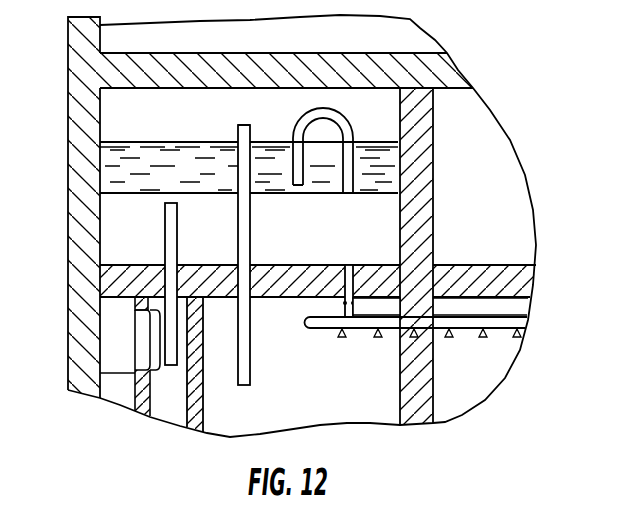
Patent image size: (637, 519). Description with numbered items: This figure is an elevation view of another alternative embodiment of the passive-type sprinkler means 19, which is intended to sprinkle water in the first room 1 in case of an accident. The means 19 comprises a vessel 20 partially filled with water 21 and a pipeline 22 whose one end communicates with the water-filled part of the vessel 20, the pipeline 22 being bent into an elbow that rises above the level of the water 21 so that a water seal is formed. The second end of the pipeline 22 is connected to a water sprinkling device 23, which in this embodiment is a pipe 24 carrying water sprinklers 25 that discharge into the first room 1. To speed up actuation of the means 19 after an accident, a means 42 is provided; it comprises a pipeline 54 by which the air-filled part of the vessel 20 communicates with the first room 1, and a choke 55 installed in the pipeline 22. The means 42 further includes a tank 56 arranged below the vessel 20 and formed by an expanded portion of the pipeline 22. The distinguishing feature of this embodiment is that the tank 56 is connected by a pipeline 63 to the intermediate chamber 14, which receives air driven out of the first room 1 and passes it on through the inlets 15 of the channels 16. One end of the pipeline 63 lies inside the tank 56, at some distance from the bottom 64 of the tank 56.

The first room 1 is at (374, 388).
The intermediate chamber 14 is at (172, 405).
The inlets of channels 15 is at (114, 372).
The channels 16 is at (115, 392).
The passive-type sprinkler means 19 is at (116, 111).
The vessel 20 is at (102, 187).
The water 21 is at (105, 162).
The pipeline 22 is at (350, 136).
The water sprinkling device 23 is at (354, 345).
The pipe 24 is at (523, 322).
The water sprinklers 25 is at (481, 338).
The means to speed up actuation 42 is at (265, 133).
The pipeline 54 is at (252, 364).
The choke 55 is at (357, 297).
The tank 56 is at (110, 213).
The pipeline 63 is at (165, 243).
The bottom of the tank 64 is at (292, 266).